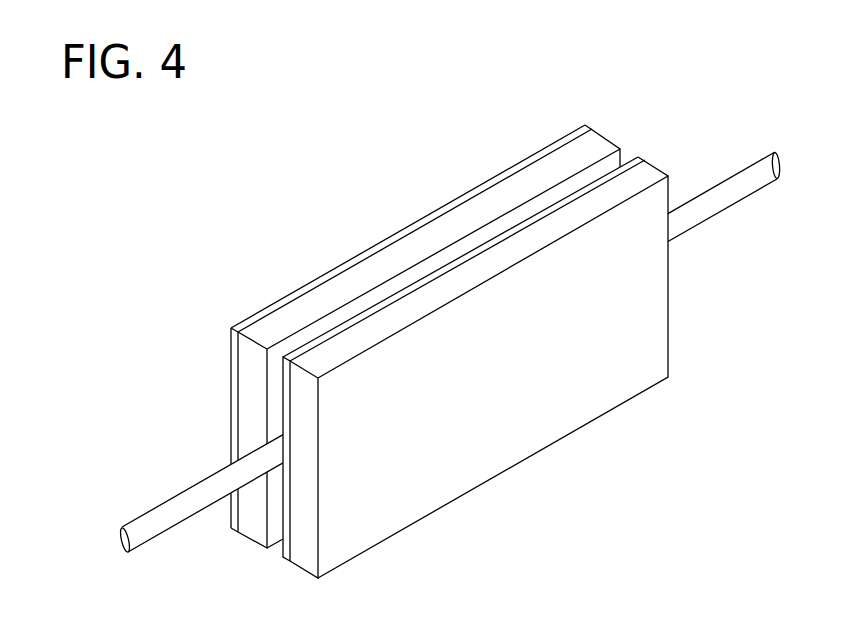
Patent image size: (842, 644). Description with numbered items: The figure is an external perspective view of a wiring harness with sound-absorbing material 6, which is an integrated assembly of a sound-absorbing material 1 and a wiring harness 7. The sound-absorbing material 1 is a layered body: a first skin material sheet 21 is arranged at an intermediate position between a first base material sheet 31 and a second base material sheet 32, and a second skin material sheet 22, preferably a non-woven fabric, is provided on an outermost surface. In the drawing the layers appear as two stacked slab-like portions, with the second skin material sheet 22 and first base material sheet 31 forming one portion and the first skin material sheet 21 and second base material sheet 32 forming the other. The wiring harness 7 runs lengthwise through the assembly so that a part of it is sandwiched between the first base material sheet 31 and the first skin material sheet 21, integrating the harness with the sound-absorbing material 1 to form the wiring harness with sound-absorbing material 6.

The sound-absorbing material 1 is at (378, 206).
The wiring harness with sound-absorbing material 6 is at (503, 165).
The wiring harness 7 is at (163, 500).
The first skin material sheet 21 is at (322, 343).
The second skin material sheet 22 is at (255, 318).
The first base material sheet 31 is at (283, 323).
The second base material sheet 32 is at (355, 350).